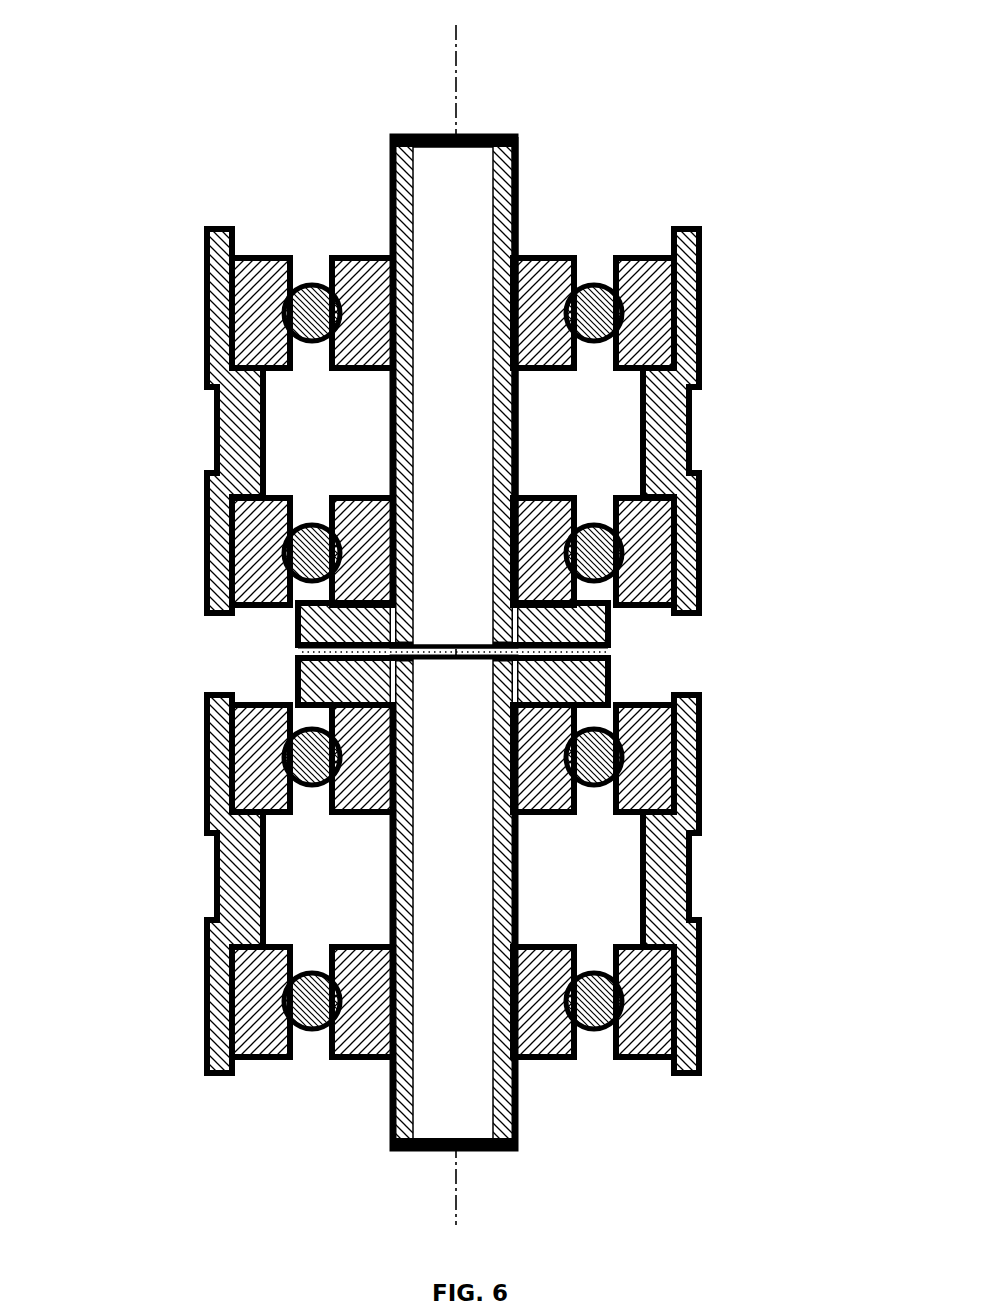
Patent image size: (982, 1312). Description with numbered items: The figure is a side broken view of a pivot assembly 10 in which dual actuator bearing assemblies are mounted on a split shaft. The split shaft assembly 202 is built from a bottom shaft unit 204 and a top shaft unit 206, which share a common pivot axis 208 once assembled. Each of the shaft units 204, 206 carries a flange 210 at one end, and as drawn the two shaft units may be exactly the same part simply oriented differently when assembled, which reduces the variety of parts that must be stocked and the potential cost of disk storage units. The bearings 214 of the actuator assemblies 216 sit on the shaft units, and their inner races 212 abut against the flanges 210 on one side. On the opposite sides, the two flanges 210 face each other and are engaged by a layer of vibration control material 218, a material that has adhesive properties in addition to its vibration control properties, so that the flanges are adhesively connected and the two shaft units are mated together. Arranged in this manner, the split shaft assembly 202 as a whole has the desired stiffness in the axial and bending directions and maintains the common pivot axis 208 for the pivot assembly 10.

The pivot assembly 10 is at (707, 122).
The split shaft assembly 202 is at (461, 340).
The bottom shaft unit 204 is at (515, 1130).
The top shaft unit 206 is at (515, 137).
The pivot axis 208 is at (457, 60).
The flange 210 is at (330, 627).
The inner race 212 is at (362, 370).
The bearing 214 is at (435, 307).
The actuator assembly 216 is at (178, 423).
The layer of vibration control material 218 is at (600, 652).